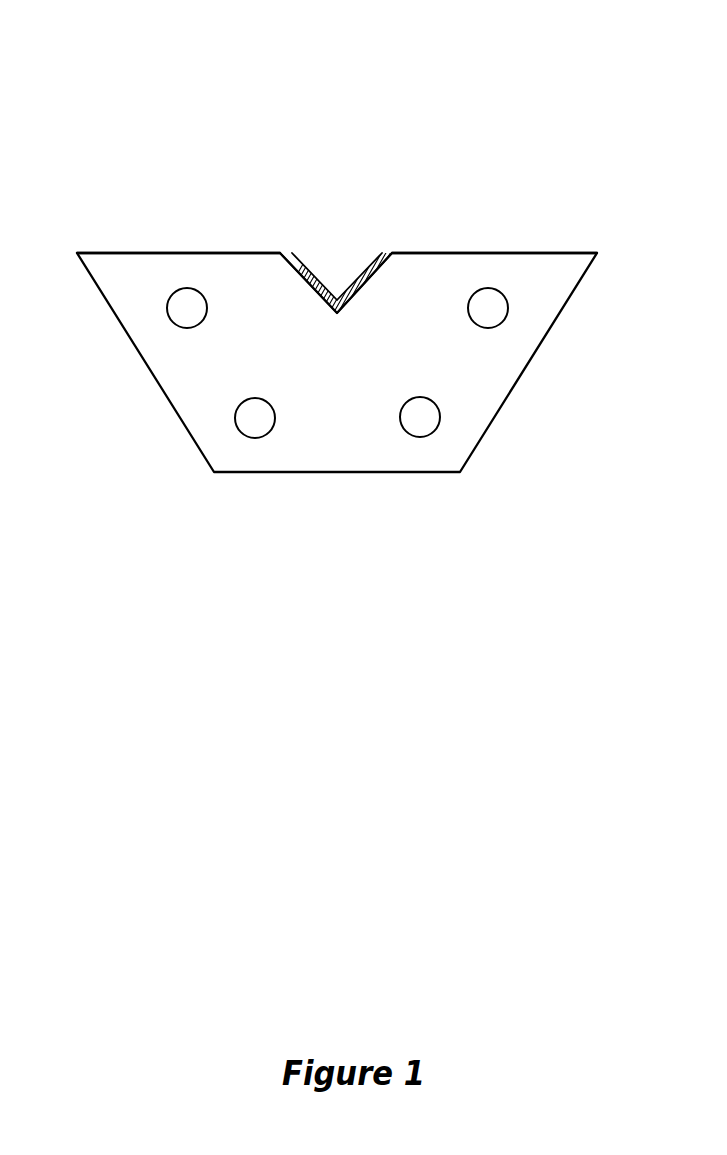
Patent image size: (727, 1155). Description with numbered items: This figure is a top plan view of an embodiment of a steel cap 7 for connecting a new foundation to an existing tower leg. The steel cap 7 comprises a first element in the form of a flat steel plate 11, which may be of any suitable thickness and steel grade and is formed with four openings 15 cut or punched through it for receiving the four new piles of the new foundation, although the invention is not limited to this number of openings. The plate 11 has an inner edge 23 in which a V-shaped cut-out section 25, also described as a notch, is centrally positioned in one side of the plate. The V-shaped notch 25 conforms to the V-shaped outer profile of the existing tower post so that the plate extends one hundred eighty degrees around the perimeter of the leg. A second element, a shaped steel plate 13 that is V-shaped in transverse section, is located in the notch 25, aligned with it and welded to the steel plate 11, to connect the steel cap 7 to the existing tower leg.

The steel cap 7 is at (84, 127).
The flat steel plate 11 is at (460, 373).
The shaped steel plate 13 is at (360, 252).
The openings 15 is at (486, 298).
The inner edge 23 is at (186, 253).
The V-shaped cut-out section 25 is at (306, 288).